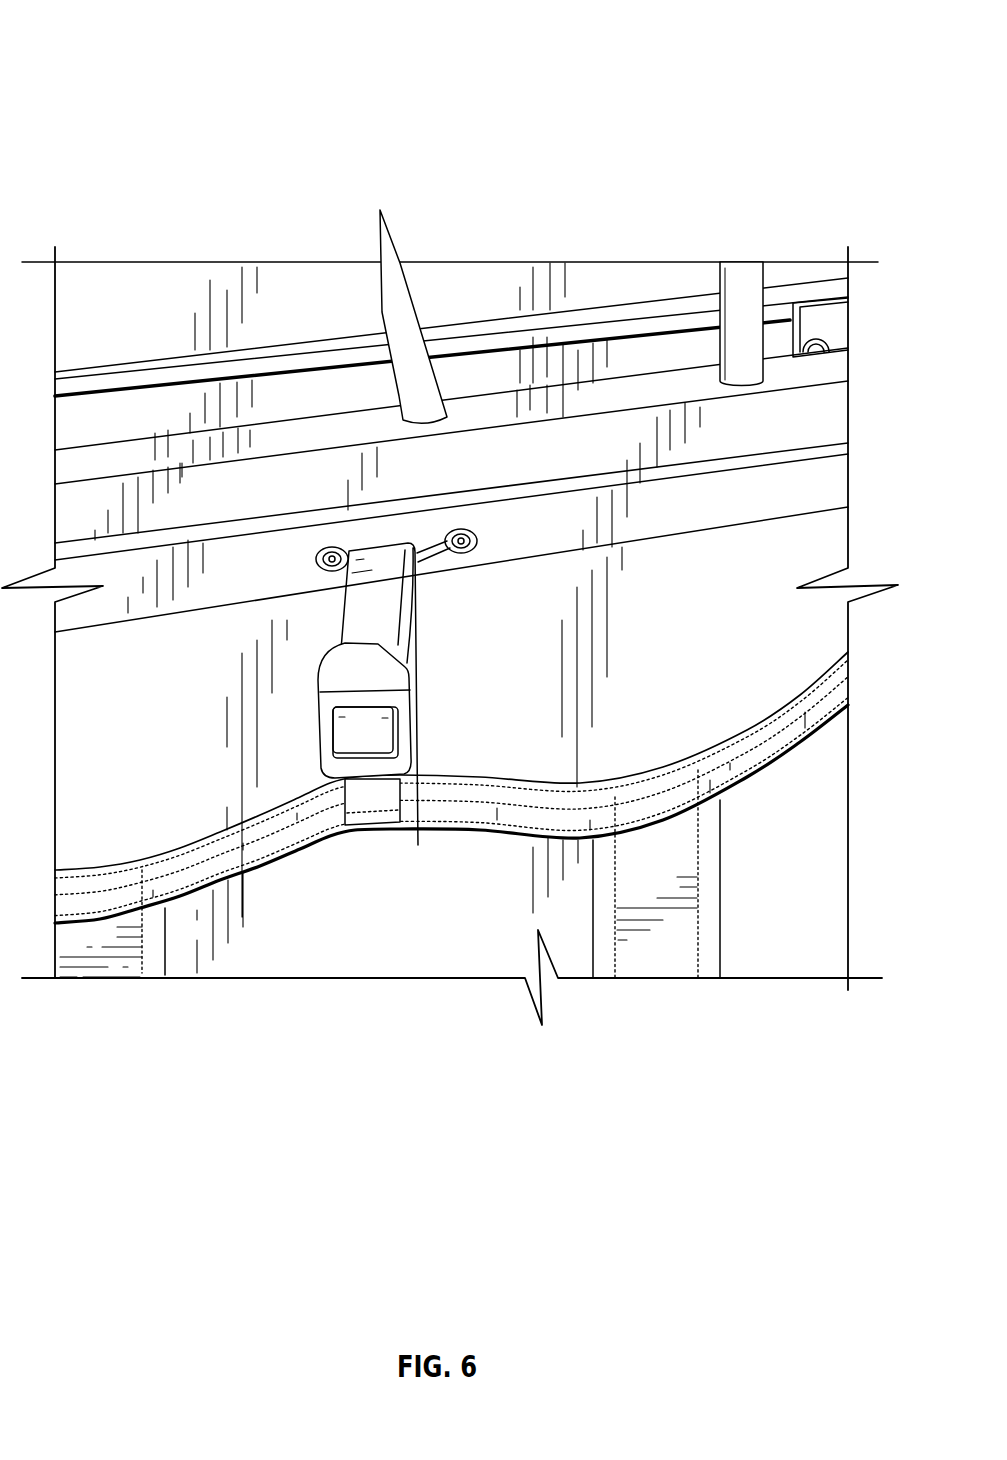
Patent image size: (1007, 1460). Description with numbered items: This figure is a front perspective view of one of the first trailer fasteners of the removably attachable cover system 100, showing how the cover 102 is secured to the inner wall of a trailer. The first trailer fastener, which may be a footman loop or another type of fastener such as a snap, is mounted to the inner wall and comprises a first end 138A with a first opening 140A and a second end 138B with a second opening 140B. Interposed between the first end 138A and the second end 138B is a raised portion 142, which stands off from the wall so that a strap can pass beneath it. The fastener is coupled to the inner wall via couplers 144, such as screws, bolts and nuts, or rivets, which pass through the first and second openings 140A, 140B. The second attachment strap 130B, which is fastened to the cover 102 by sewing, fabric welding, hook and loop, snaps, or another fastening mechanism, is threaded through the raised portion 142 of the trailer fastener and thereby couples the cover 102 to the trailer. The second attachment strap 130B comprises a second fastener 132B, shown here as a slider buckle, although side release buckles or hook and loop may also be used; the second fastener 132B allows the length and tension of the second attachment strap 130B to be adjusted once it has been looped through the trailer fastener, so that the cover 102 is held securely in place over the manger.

The removably attachable cover system 100 is at (181, 42).
The cover 102 is at (658, 808).
The second attachment strap 130B is at (350, 620).
The second fastener 132B is at (368, 663).
The first end 138A is at (318, 545).
The second end 138B is at (453, 520).
The first opening 140A is at (330, 545).
The second opening 140B is at (467, 520).
The raised portion 142 is at (415, 543).
The couplers 144 is at (466, 539).